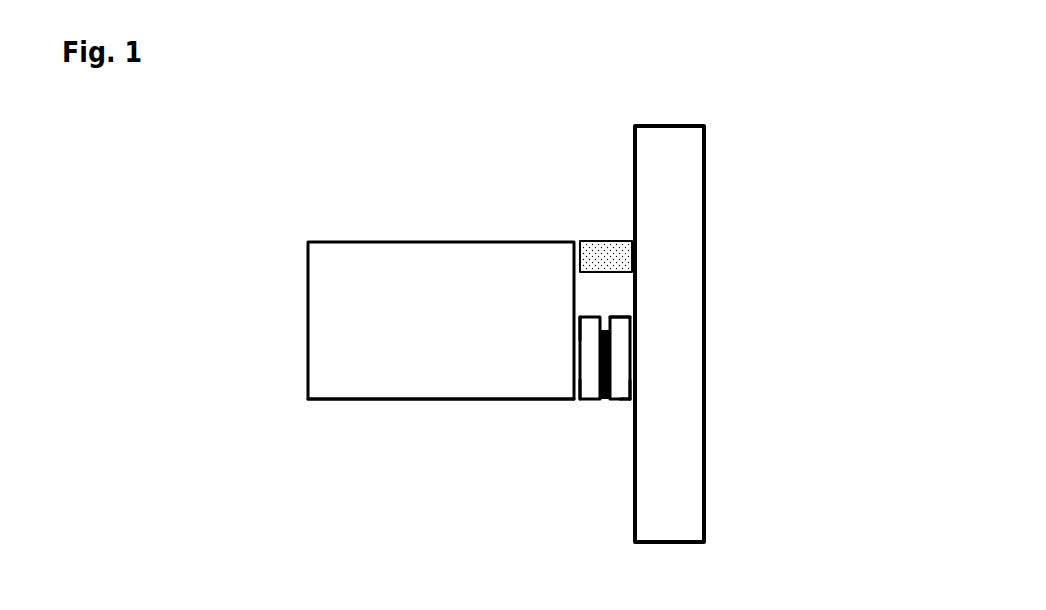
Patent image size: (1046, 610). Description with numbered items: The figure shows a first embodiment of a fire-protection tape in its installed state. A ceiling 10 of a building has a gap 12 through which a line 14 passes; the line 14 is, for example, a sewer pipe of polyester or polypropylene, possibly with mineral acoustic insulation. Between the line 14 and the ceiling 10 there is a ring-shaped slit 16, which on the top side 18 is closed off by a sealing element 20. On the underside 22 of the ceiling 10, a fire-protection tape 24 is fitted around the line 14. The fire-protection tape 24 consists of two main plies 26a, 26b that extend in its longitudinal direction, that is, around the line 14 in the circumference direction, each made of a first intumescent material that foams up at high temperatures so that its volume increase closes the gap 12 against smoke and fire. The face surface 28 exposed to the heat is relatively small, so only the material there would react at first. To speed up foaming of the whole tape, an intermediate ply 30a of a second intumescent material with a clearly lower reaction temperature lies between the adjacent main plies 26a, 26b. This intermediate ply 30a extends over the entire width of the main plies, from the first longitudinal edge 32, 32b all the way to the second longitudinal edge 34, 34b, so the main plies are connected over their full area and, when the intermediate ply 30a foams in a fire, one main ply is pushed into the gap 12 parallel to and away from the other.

The ceiling 10 is at (415, 323).
The gap 12 is at (640, 290).
The line 14 is at (677, 143).
The ring-shaped slit 16 is at (622, 285).
The top side 18 is at (385, 235).
The sealing element 20 is at (592, 255).
The underside 22 is at (377, 409).
The fire-protection tape 24 is at (640, 381).
The first main ply 26a is at (587, 337).
The second main ply 26b is at (622, 337).
The face surface 28 is at (628, 419).
The intermediate ply 30a is at (604, 400).
The first longitudinal edge 32 is at (590, 400).
The first longitudinal edge 32b is at (628, 400).
The second longitudinal edge 34 is at (581, 318).
The second longitudinal edge 34b is at (622, 317).